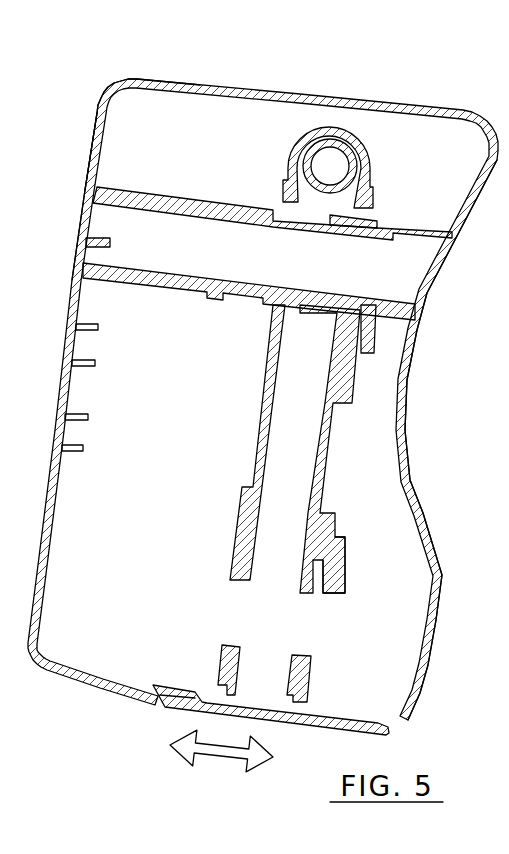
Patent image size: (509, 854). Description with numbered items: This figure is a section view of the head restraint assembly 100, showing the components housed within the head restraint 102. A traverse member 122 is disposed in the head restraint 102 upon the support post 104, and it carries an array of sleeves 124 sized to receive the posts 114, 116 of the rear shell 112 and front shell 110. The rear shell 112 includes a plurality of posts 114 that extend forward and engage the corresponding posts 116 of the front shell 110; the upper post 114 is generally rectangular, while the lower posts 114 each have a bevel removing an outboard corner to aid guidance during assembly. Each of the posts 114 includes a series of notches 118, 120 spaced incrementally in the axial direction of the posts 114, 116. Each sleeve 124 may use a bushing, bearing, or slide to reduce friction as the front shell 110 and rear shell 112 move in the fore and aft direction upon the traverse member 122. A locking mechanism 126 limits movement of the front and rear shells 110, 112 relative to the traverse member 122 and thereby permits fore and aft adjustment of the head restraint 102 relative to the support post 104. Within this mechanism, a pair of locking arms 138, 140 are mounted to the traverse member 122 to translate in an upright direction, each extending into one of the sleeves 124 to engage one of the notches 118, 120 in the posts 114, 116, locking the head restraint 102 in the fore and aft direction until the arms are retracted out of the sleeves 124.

The head restraint assembly 100 is at (198, 58).
The head restraint 102 is at (431, 107).
The support post 104 is at (333, 137).
The front shell 110 is at (458, 233).
The rear shell 112 is at (102, 97).
The post 114 is at (127, 187).
The post 116 is at (415, 233).
The notch 118 is at (215, 297).
The notch 120 is at (373, 318).
The traverse member 122 is at (330, 133).
The sleeve 124 is at (357, 215).
The locking mechanism 126 is at (368, 555).
The locking arm 138 is at (367, 340).
The locking arm 140 is at (340, 570).